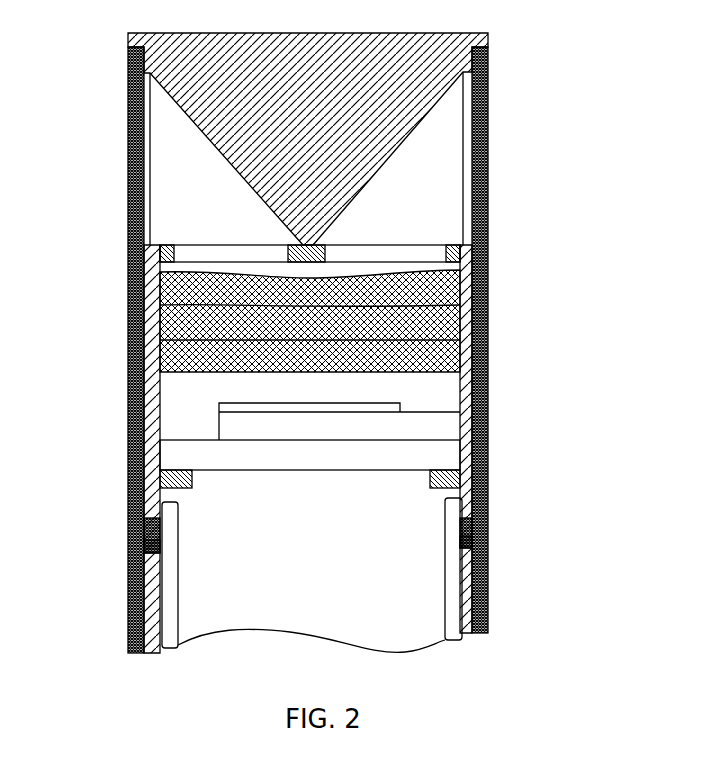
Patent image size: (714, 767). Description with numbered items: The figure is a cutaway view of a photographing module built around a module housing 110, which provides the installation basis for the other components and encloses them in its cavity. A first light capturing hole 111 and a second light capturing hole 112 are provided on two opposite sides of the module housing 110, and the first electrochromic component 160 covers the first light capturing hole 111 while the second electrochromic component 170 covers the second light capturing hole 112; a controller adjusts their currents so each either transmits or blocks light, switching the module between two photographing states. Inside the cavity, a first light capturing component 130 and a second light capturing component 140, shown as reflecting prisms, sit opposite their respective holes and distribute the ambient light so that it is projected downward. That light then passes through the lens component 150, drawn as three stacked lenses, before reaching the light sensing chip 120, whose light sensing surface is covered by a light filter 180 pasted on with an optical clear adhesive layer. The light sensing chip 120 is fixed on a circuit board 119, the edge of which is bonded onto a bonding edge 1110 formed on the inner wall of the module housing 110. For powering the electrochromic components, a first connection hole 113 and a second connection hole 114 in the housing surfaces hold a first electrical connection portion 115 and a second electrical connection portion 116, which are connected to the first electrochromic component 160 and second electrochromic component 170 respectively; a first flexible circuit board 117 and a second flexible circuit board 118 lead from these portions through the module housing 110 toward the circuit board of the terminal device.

The module housing 110 is at (490, 65).
The first light capturing hole 111 is at (127, 150).
The second light capturing hole 112 is at (490, 135).
The first connection hole 113 is at (145, 520).
The second connection hole 114 is at (490, 512).
The first electrical connection portion 115 is at (130, 548).
The second electrical connection portion 116 is at (490, 532).
The first flexible circuit board 117 is at (168, 580).
The second flexible circuit board 118 is at (455, 580).
The circuit board 119 is at (380, 462).
The light sensing chip 120 is at (384, 430).
The first light capturing component 130 is at (158, 208).
The second light capturing component 140 is at (430, 175).
The lens component 150 is at (490, 285).
The first electrochromic component 160 is at (127, 120).
The second electrochromic component 170 is at (490, 215).
The light filter 180 is at (400, 403).
The bonding edge 1110 is at (430, 486).